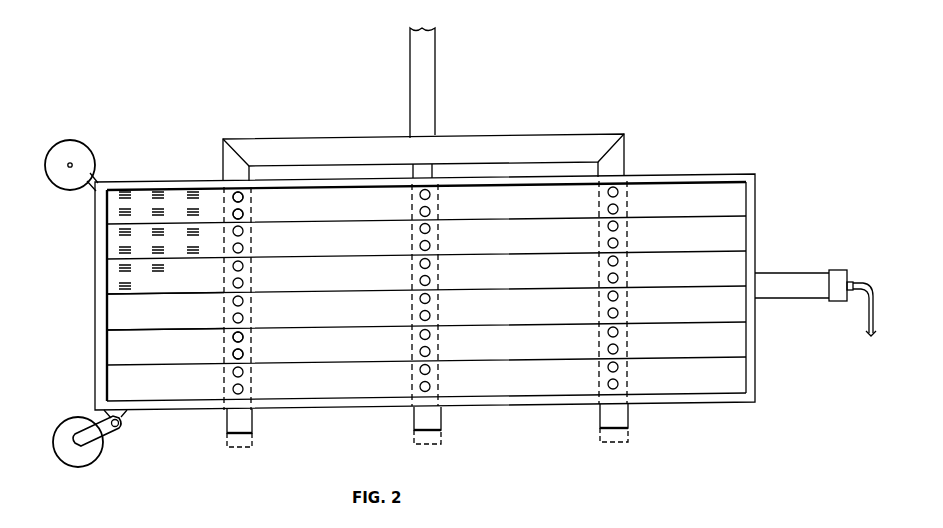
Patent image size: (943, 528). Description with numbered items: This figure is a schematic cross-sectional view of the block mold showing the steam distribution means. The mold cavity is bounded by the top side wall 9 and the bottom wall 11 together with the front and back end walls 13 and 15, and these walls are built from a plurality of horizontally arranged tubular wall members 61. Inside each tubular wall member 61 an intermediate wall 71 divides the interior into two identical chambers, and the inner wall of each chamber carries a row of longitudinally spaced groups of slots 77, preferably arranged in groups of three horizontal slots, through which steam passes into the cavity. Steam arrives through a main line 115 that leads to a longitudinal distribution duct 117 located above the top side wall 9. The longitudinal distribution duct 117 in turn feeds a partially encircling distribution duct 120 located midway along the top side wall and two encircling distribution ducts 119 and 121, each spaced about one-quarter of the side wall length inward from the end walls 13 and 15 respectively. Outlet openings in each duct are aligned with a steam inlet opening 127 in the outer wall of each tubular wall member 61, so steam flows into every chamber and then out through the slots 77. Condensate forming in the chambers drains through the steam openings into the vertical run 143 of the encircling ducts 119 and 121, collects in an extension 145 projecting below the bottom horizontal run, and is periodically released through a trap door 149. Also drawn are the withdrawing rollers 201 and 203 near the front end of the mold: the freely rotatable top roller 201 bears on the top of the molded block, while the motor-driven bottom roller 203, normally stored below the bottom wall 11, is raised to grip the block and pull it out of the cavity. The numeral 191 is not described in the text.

The top side wall 9 is at (716, 171).
The bottom side wall 11 is at (652, 412).
The end wall 13 is at (94, 365).
The end wall 15 is at (766, 364).
The tubular wall member 61 is at (113, 217).
The intermediate wall 71 is at (143, 319).
The slots 77 is at (157, 189).
The main line 115 is at (437, 63).
The longitudinal distribution duct 117 is at (550, 134).
The encircling distribution duct 119 is at (264, 279).
The partially encircling distribution duct 120 is at (446, 277).
The encircling distribution duct 121 is at (644, 302).
The steam inlet opening 127 is at (244, 213).
The vertical run 143 is at (253, 352).
The extension 145 is at (254, 423).
The trap door 149 is at (240, 448).
The handle 191 is at (815, 247).
The top withdrawing roller 201 is at (99, 144).
The bottom withdrawing roller 203 is at (98, 468).